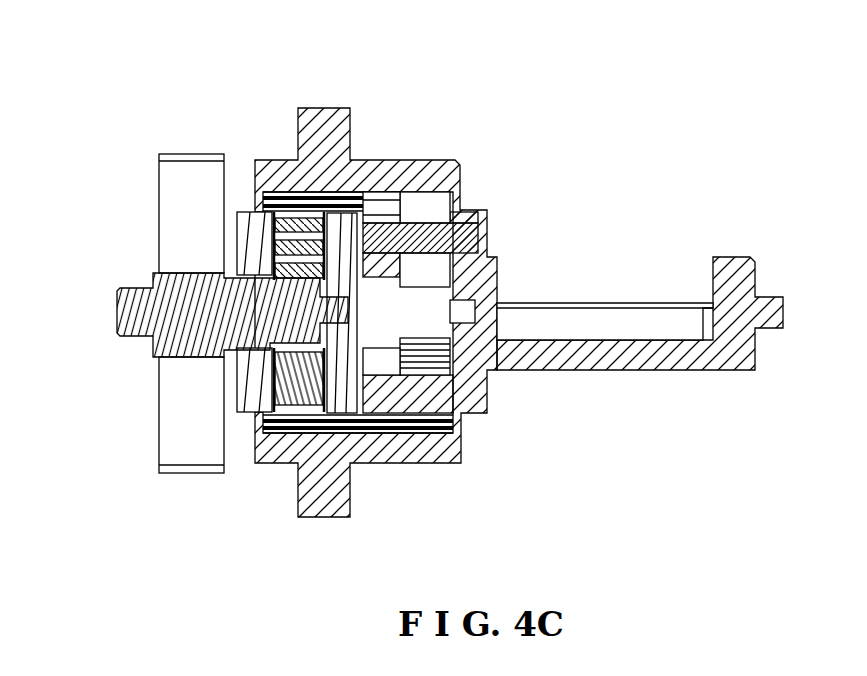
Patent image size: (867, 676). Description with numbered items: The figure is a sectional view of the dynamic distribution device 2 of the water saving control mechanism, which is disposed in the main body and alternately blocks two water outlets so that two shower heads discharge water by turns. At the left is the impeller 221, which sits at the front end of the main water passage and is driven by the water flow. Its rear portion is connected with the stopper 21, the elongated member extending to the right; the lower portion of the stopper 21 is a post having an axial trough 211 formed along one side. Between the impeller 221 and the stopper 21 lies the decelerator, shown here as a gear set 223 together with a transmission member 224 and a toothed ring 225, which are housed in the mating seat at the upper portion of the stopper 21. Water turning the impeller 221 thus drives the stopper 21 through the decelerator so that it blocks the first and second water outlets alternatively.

The dynamic distribution device 2 is at (551, 161).
The stopper 21 is at (610, 367).
The axial trough 211 is at (595, 315).
The impeller 221 is at (170, 404).
The gear set 223 is at (289, 218).
The transmission member 224 is at (421, 298).
The toothed ring 225 is at (374, 190).